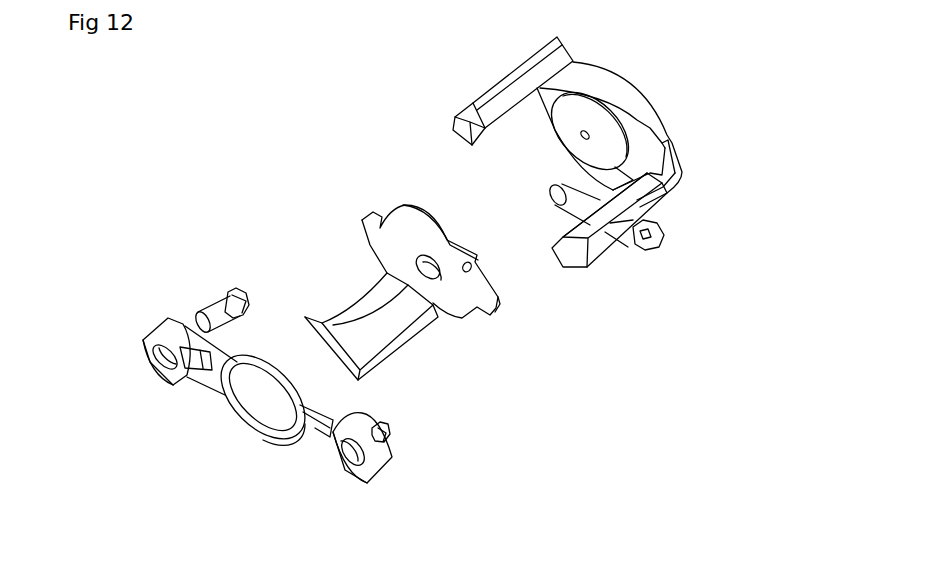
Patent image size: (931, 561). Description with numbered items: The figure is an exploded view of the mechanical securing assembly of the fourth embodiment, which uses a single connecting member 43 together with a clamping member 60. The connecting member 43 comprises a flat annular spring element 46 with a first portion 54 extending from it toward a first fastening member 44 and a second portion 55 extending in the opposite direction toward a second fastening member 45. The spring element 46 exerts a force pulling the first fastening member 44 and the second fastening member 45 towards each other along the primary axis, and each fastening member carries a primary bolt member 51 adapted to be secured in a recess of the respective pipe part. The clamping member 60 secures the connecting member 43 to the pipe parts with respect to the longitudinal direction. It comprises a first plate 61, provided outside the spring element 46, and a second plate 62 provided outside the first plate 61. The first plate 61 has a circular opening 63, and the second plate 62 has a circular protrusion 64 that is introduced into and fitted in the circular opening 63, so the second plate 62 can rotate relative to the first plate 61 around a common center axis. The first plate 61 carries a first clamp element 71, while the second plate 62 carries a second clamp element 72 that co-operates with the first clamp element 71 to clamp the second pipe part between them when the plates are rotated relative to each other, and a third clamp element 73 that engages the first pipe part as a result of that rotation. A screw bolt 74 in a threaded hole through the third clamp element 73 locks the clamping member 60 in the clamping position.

The clamping member 60 is at (185, 125).
The second clamp element 72 is at (482, 107).
The second plate 62 is at (605, 77).
The circular protrusion 64 is at (603, 131).
The screw bolt 74 is at (565, 190).
The third clamp element 73 is at (640, 197).
The first plate 61 is at (367, 220).
The circular opening 63 is at (433, 273).
The first clamp element 71 is at (385, 340).
The connecting member 43 is at (192, 407).
The spring element 46 is at (250, 427).
The first portion 54 is at (325, 435).
The second fastening member 45 is at (143, 332).
The second portion 55 is at (200, 357).
The primary bolt member 51 is at (202, 297).
The first fastening member 44 is at (393, 459).